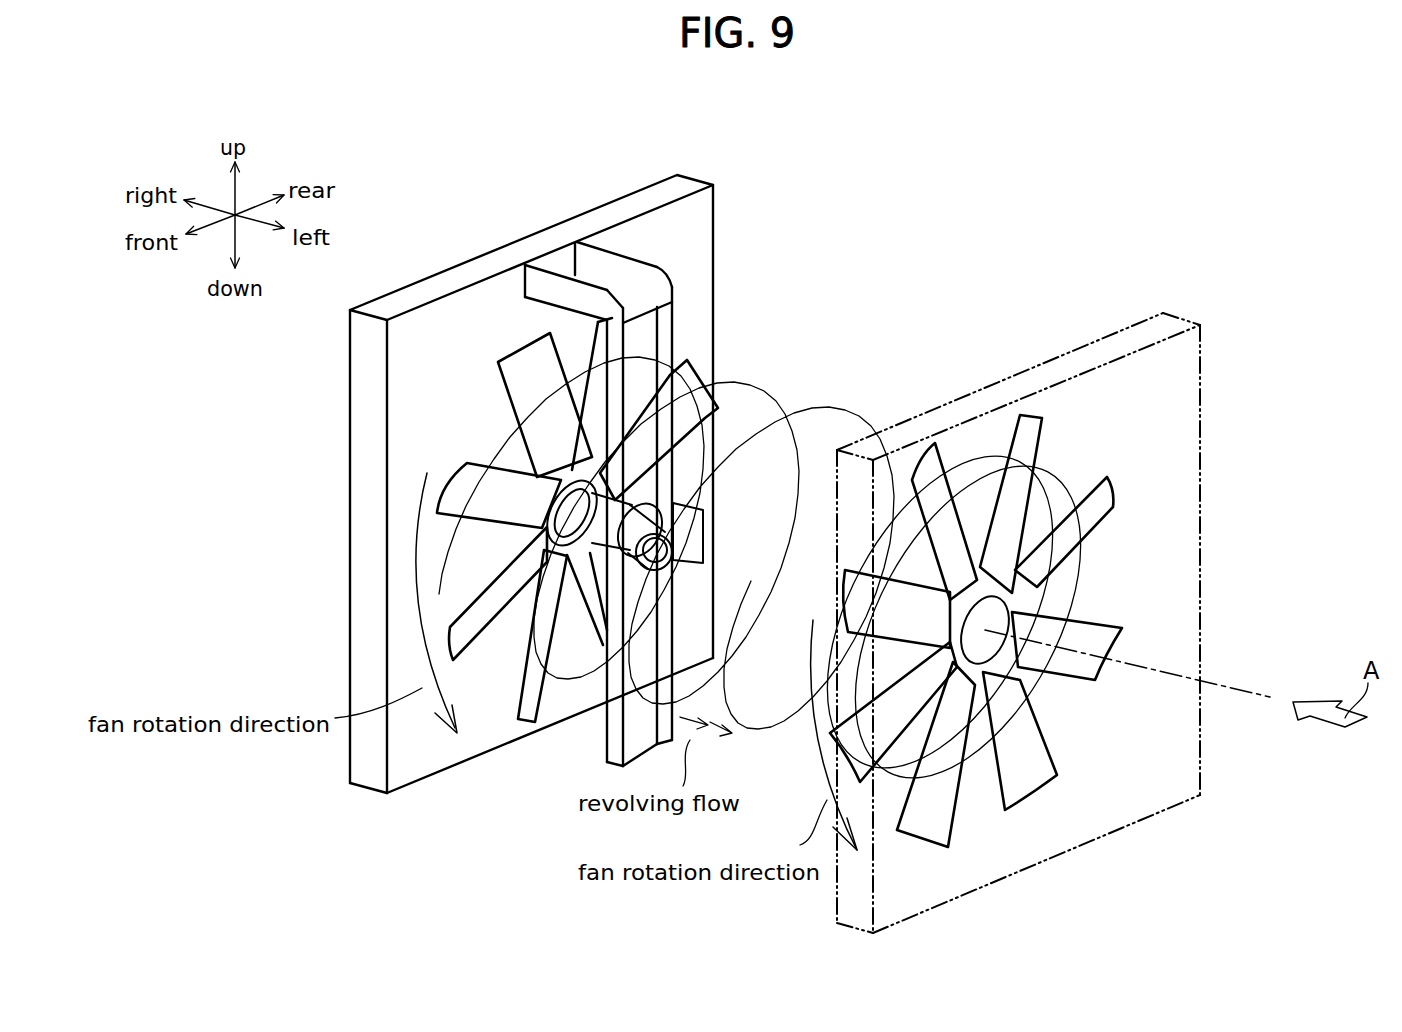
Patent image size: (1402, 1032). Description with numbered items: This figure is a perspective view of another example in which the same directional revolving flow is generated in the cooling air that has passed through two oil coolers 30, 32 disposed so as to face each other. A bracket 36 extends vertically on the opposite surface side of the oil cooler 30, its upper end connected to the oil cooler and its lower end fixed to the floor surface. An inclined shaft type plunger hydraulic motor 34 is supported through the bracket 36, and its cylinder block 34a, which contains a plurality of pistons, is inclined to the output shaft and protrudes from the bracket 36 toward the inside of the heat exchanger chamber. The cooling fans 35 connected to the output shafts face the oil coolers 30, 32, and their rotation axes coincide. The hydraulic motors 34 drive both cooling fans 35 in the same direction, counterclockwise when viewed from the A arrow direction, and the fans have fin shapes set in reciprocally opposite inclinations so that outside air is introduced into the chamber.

The oil cooler 30 is at (628, 205).
The oil cooler 32 is at (1205, 358).
The inclined shaft type plunger hydraulic motor 34 is at (645, 520).
The cylinder block 34a is at (742, 435).
The cooling fan 35 is at (513, 368).
The bracket 36 is at (640, 272).